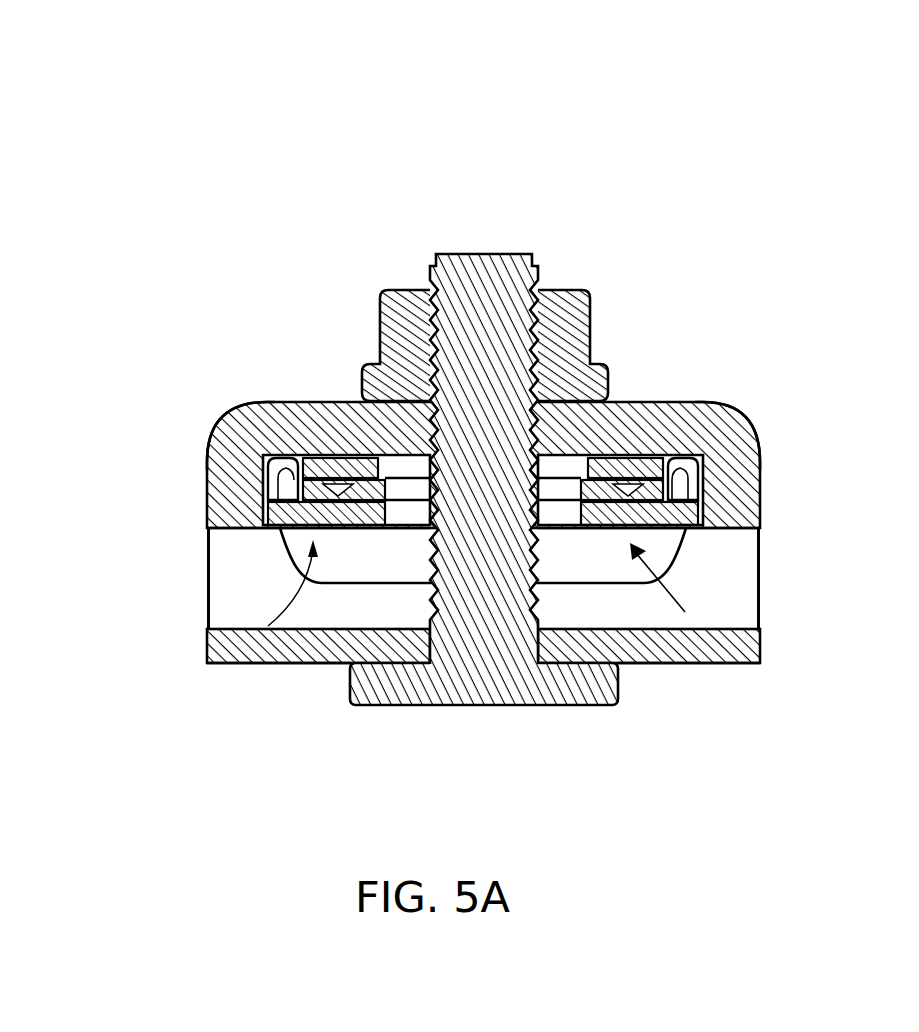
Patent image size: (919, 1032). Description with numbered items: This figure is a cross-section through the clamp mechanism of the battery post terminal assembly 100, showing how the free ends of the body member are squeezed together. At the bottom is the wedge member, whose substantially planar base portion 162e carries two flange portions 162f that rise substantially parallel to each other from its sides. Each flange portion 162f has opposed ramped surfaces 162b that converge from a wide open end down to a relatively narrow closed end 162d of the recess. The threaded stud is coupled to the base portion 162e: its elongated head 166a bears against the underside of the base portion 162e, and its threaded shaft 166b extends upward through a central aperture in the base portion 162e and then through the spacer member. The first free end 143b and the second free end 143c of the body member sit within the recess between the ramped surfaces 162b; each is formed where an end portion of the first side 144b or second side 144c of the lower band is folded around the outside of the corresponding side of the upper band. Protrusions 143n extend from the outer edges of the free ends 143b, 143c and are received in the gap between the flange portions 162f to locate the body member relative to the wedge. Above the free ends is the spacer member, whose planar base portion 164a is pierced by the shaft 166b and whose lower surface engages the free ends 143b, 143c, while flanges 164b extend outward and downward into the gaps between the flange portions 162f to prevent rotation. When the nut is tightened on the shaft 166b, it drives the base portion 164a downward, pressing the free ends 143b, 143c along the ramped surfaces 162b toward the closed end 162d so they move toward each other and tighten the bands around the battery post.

The battery post terminal assembly 100 is at (222, 88).
The threaded shaft 166b is at (470, 255).
The head 166a is at (518, 693).
The base portion 164a is at (318, 402).
The flanges 164b is at (207, 452).
The second side 144c is at (262, 458).
The first side 144b is at (695, 458).
The protrusions 143n is at (230, 540).
The flange portions 162f is at (233, 572).
The ramped surfaces 162b is at (260, 540).
The second free end 143c is at (236, 664).
The first free end 143b is at (705, 600).
The base portion 162e is at (285, 664).
The closed end 162d is at (683, 664).